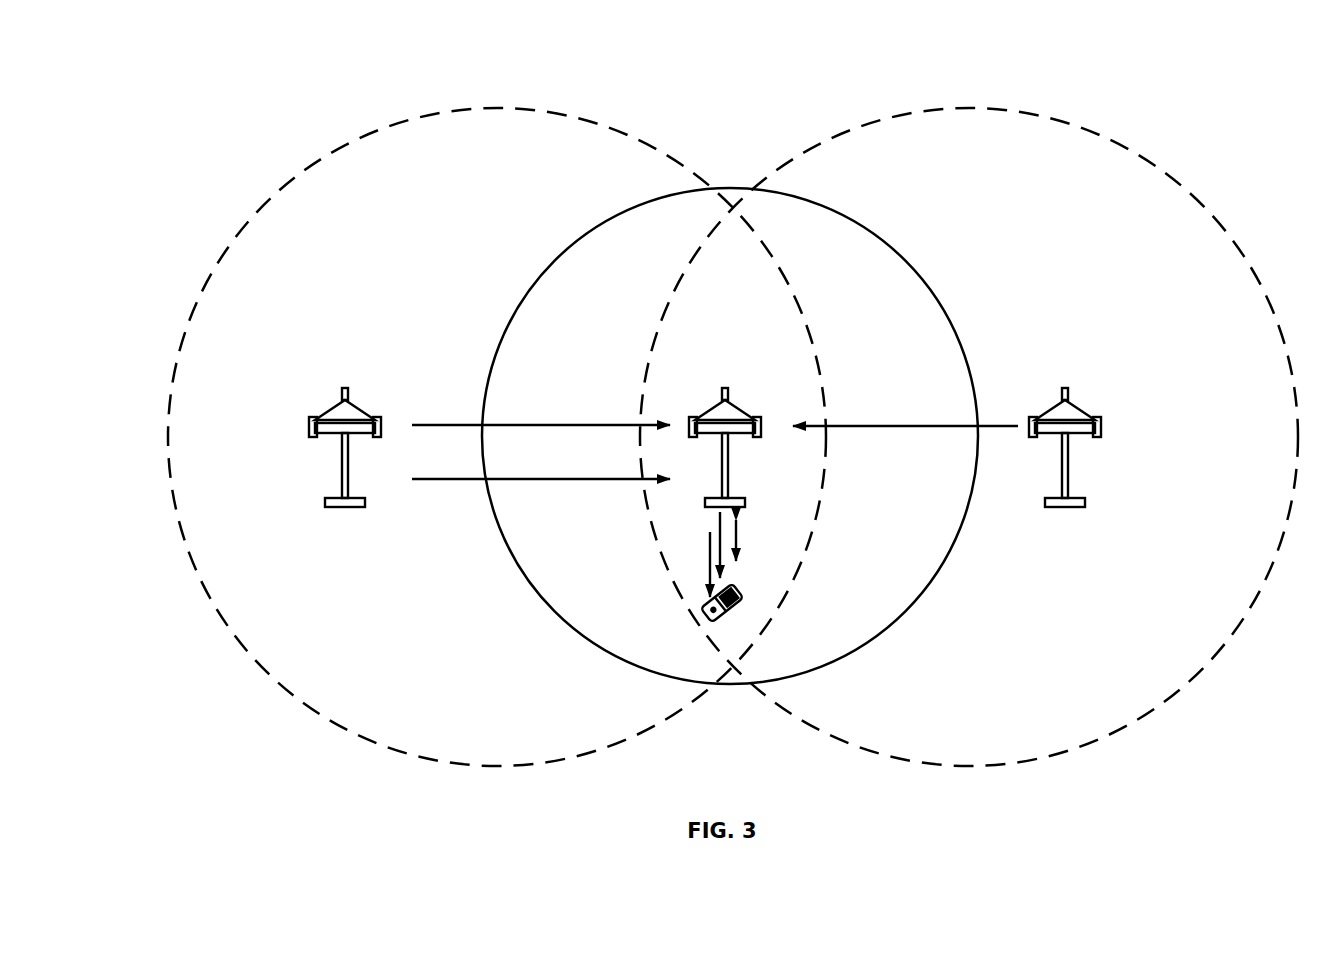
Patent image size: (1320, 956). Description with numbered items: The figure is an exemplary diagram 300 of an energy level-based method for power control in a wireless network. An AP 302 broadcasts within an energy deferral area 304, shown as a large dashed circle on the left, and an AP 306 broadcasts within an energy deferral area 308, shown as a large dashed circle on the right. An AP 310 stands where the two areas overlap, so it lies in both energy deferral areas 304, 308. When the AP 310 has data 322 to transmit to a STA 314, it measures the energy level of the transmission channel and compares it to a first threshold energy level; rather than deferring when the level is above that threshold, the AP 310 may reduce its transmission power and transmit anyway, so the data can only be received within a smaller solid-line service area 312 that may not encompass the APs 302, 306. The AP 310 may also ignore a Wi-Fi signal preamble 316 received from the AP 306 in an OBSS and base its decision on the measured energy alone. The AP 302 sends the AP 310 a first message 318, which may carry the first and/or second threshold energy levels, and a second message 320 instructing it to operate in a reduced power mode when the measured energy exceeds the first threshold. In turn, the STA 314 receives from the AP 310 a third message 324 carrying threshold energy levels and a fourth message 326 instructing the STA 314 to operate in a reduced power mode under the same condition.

The diagram 300 is at (172, 106).
The AP 302 is at (344, 386).
The energy deferral area 304 is at (446, 106).
The AP 306 is at (1064, 386).
The energy deferral area 308 is at (944, 106).
The AP 310 is at (724, 386).
The service area 312 is at (655, 195).
The STA 314 is at (728, 590).
The Wi-Fi signal preamble 316 is at (860, 426).
The first message 318 is at (500, 425).
The second message 320 is at (500, 479).
The data 322 is at (736, 538).
The third message 324 is at (720, 520).
The fourth message 326 is at (710, 560).